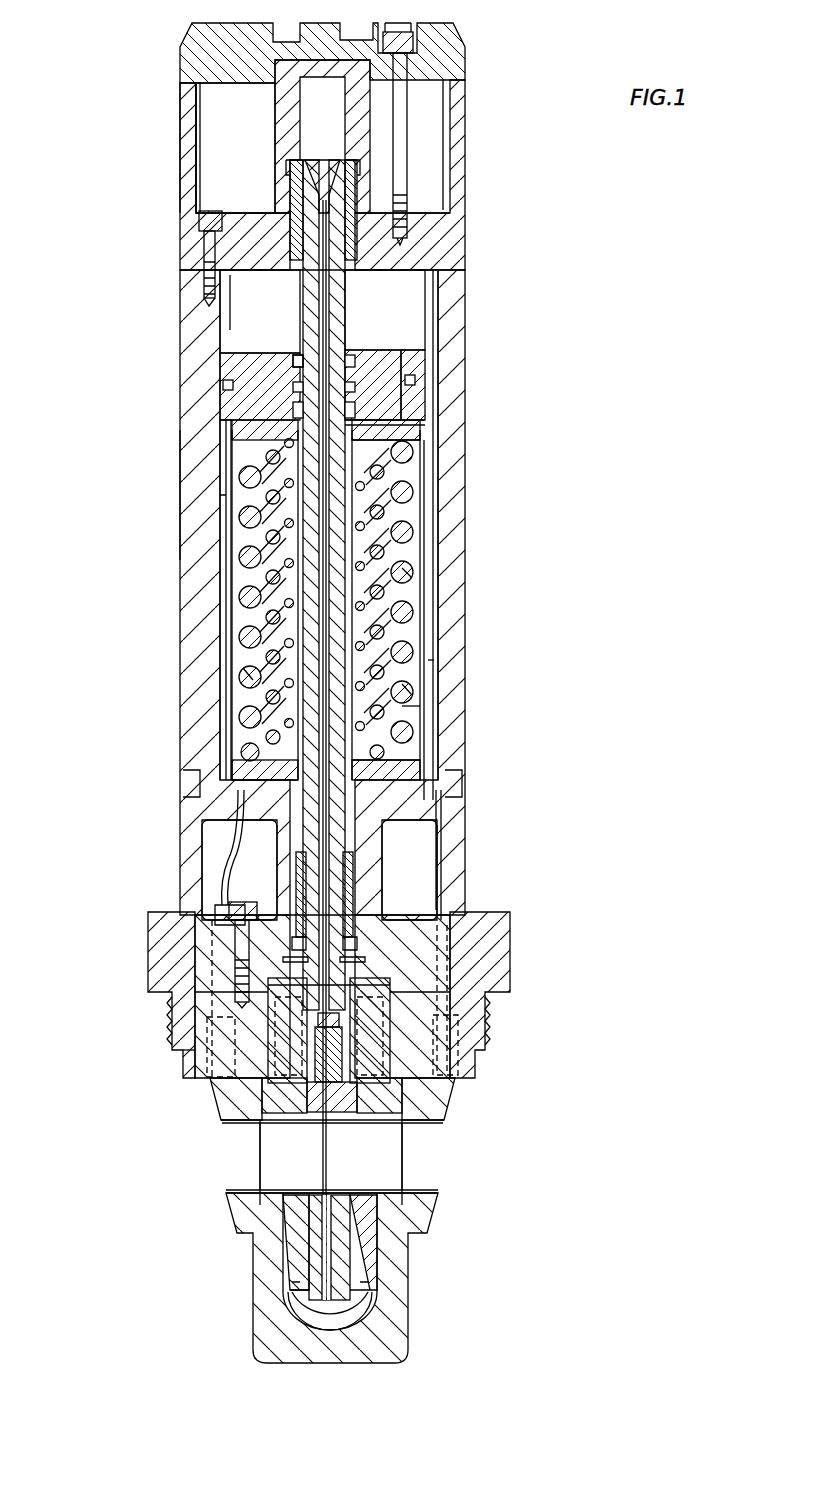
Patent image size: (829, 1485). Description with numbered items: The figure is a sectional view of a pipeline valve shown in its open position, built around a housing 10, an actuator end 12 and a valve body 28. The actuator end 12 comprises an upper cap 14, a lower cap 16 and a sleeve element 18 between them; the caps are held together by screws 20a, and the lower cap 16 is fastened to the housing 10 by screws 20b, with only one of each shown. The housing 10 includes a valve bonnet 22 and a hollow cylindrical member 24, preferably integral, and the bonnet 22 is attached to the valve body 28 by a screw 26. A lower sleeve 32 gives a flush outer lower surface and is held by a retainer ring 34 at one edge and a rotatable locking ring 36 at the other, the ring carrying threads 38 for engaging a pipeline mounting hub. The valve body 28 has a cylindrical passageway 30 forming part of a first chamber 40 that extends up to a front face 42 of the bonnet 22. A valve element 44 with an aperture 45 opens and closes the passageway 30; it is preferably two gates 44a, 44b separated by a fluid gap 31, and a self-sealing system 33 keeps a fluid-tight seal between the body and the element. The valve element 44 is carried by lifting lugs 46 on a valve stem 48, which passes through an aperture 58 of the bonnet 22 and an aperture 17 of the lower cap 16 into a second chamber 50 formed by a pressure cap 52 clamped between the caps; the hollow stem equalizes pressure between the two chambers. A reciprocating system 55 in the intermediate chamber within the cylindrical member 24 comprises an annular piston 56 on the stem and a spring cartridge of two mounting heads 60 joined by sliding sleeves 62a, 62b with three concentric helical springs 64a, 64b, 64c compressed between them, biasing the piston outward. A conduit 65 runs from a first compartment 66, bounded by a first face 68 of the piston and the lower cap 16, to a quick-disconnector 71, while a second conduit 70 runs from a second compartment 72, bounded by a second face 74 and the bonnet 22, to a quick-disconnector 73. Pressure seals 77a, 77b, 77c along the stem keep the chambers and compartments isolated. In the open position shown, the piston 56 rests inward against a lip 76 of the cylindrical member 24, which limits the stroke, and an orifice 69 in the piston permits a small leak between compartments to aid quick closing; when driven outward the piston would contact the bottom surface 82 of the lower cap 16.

The housing 10 is at (77, 508).
The actuator end 12 is at (129, 133).
The upper cap 14 is at (186, 43).
The lower cap 16 is at (200, 232).
The aperture of the lower cap 17 is at (358, 195).
The sleeve element 18 is at (190, 96).
The screws 20a is at (400, 95).
The screws 20b is at (206, 266).
The valve bonnet 22 is at (422, 810).
The hollow cylindrical member 24 is at (454, 492).
The screw 26 is at (188, 905).
The valve body 28 is at (293, 1120).
The cylindrical passageway 30 is at (242, 1164).
The fluid gap 31 is at (338, 1252).
The lower sleeve 32 is at (466, 862).
The self-sealing system 33 is at (292, 1116).
The retainer ring 34 is at (462, 780).
The locking ring 36 is at (492, 926).
The threads 38 is at (490, 1022).
The first chamber 40 is at (312, 1024).
The front face 42 is at (422, 986).
The valve element 44 is at (308, 1325).
The gate 44a is at (316, 1275).
The gate 44b is at (352, 1285).
The aperture 45 is at (342, 1166).
The lifting lugs 46 is at (352, 1080).
The valve stem 48 is at (207, 1022).
The second chamber 50 is at (311, 112).
The pressure cap 52 is at (288, 131).
The reciprocating system 55 is at (232, 619).
The annular piston 56 is at (255, 402).
The aperture of the bonnet 58 is at (300, 782).
The mounting heads 60 is at (402, 442).
The sliding sleeve 62a is at (238, 674).
The sliding sleeve 62b is at (412, 578).
The helical spring 64a is at (414, 630).
The helical spring 64b is at (428, 661).
The helical spring 64c is at (412, 690).
The conduit 65 is at (434, 525).
The first compartment 66 is at (370, 311).
The first face 68 is at (410, 352).
The orifice 69 is at (390, 414).
The second conduit 70 is at (242, 882).
The quick-disconnector 71 is at (470, 1062).
The second compartment 72 is at (416, 709).
The quick-disconnector 73 is at (207, 1057).
The second face 74 is at (252, 418).
The lip 76 is at (226, 472).
The pressure seal 77a is at (300, 870).
The pressure seal 77b is at (300, 366).
The pressure seal 77c is at (362, 252).
The bottom surface 82 is at (236, 280).